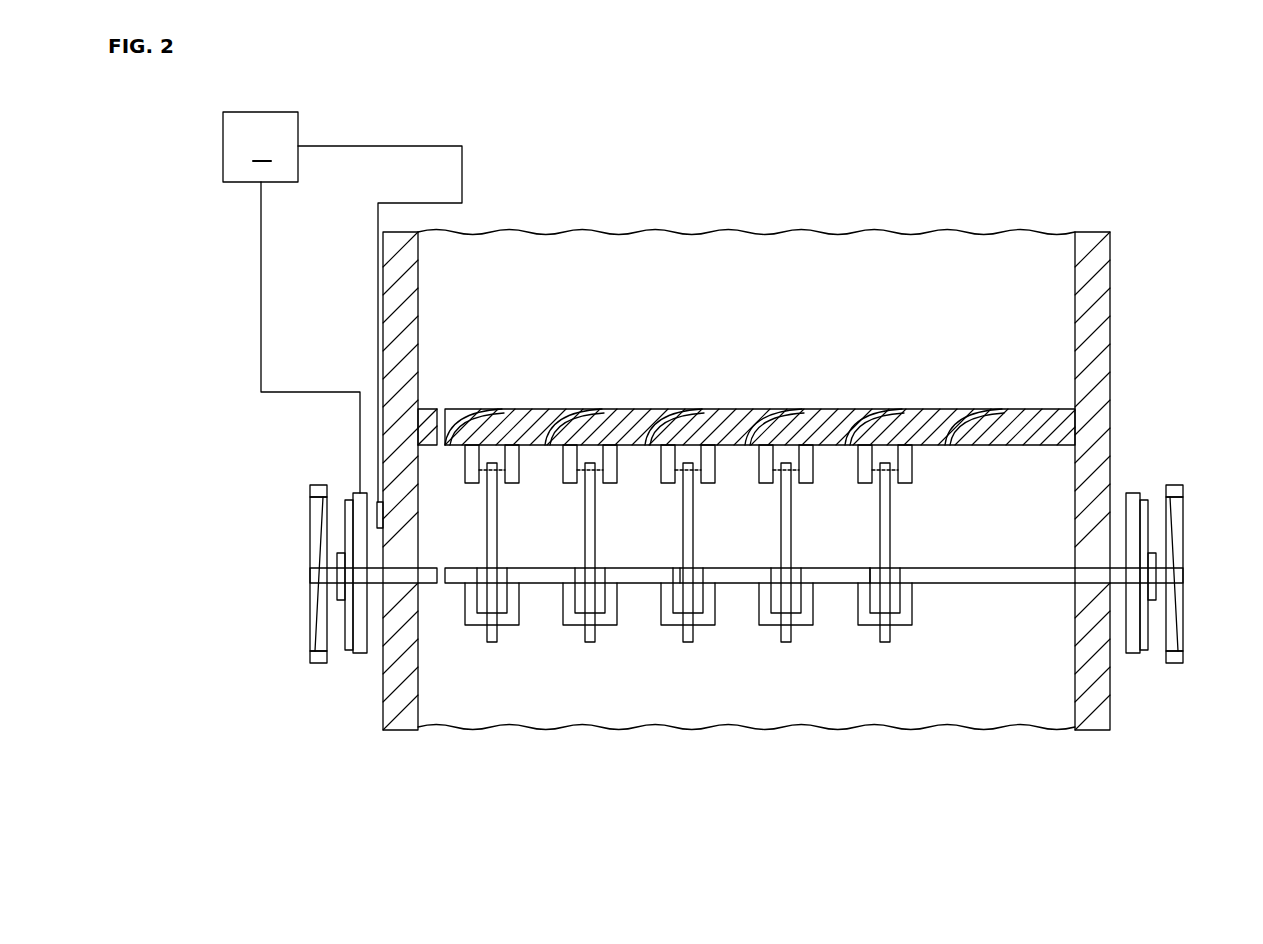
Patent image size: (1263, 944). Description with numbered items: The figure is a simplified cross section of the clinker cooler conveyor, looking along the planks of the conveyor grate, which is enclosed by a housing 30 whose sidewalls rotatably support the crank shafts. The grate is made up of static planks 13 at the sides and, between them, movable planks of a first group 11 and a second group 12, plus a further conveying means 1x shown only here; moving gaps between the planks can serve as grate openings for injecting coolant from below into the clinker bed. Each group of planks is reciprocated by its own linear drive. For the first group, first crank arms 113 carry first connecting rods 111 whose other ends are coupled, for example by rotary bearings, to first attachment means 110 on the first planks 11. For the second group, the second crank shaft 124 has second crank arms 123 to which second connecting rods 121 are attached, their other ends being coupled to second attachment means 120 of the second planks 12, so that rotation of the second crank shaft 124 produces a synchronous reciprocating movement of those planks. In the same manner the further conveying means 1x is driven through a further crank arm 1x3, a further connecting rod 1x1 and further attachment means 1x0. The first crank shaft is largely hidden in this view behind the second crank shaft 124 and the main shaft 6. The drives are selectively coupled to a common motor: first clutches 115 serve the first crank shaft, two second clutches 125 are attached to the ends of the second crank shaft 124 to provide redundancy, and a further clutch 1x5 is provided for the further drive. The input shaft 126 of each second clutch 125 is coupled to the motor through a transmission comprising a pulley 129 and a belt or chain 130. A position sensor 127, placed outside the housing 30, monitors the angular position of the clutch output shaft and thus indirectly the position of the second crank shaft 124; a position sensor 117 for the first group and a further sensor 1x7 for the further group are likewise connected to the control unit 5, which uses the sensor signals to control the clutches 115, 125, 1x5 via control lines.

The control unit 5 is at (342, 307).
The position sensor of the first group of conveying means 117 is at (300, 122).
The further sensor 1x7 is at (300, 171).
The first clutch 115 is at (235, 184).
The further clutch 1x5 is at (286, 184).
The housing 30 is at (404, 300).
The static plank 13 is at (436, 424).
The further conveying means 1x is at (530, 420).
The conveying means of the first group 11 is at (635, 420).
The conveying means of the second group 12 is at (727, 420).
The part of transmission 130 is at (320, 483).
The part of transmission 129 is at (324, 634).
The input shaft of the second clutch 126 is at (336, 596).
The second clutch 125 is at (358, 676).
The position sensor of the second group of conveying means 127 is at (375, 512).
The second crank shaft 124 is at (1040, 584).
The main shaft 6 is at (680, 572).
The further attachment means 1x0 is at (472, 476).
The further connecting rod 1x1 is at (488, 548).
The further crank arm 1x3 is at (467, 602).
The first attachment means 110 is at (568, 476).
The first connecting rods 111 is at (584, 548).
The first crank arm 113 is at (569, 602).
The second attachment means 120 is at (665, 458).
The second connecting rods 121 is at (682, 524).
The second crank arm 123 is at (669, 600).